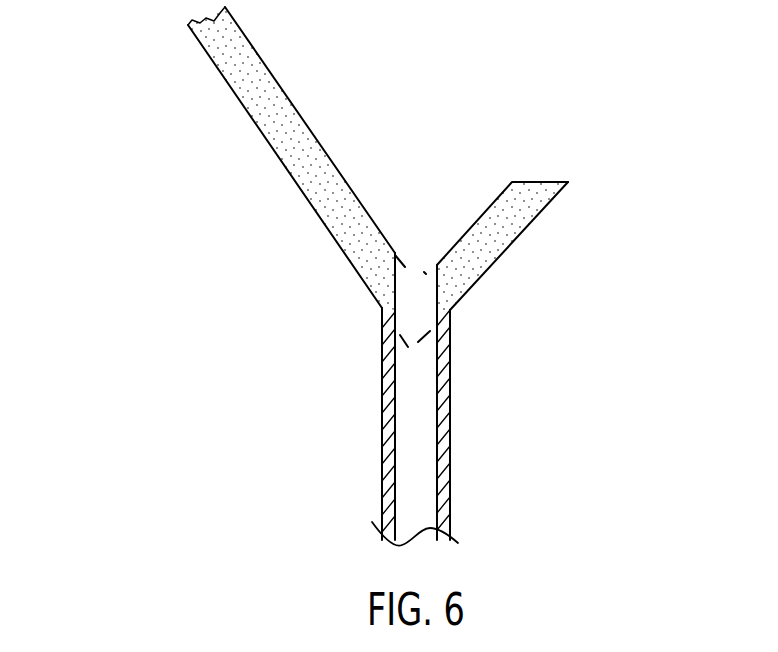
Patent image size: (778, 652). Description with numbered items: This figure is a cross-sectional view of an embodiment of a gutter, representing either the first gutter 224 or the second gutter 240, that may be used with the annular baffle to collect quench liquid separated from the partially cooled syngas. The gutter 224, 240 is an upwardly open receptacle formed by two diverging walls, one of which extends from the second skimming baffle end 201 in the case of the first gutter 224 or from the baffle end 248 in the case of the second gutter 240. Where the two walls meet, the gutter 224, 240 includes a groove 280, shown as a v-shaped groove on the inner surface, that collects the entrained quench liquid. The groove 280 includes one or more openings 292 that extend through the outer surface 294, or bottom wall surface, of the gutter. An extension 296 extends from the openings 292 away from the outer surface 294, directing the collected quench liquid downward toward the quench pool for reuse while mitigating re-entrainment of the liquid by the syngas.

The first gutter 224 is at (225, 158).
The second gutter 240 is at (158, 97).
The second skimming baffle end 201 is at (360, 399).
The baffle end 248 is at (370, 333).
The groove 280 is at (510, 214).
The openings 292 is at (417, 270).
The outer surface 294 is at (503, 253).
The extension 296 is at (450, 457).